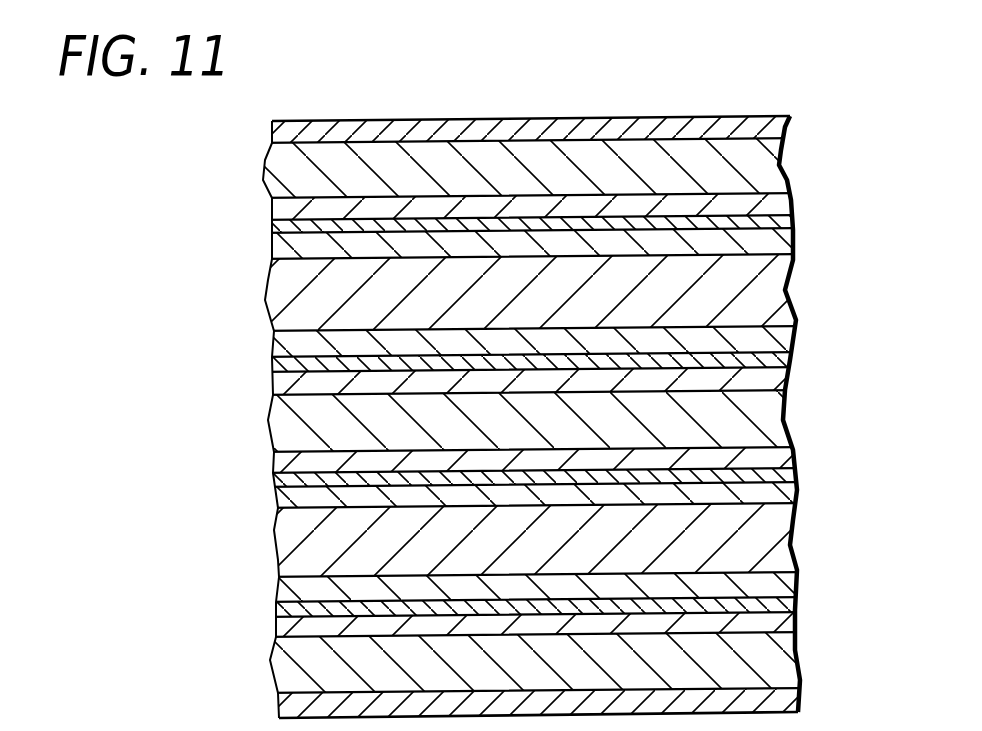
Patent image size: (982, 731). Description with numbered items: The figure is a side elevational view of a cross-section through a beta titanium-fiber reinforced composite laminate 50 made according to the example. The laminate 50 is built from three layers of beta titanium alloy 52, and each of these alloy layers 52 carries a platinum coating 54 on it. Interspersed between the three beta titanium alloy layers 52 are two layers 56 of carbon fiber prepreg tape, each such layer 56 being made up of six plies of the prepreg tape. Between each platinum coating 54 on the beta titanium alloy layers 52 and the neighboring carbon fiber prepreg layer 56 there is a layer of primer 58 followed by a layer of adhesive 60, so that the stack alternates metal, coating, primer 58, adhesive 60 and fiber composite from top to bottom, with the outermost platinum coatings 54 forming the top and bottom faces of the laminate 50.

The beta titanium-fiber reinforced composite laminate 50 is at (781, 84).
The beta titanium alloy layer 52 is at (768, 165).
The platinum coating 54 is at (768, 127).
The carbon fiber prepreg tape layer 56 is at (768, 290).
The primer layer 58 is at (768, 221).
The adhesive layer 60 is at (768, 241).